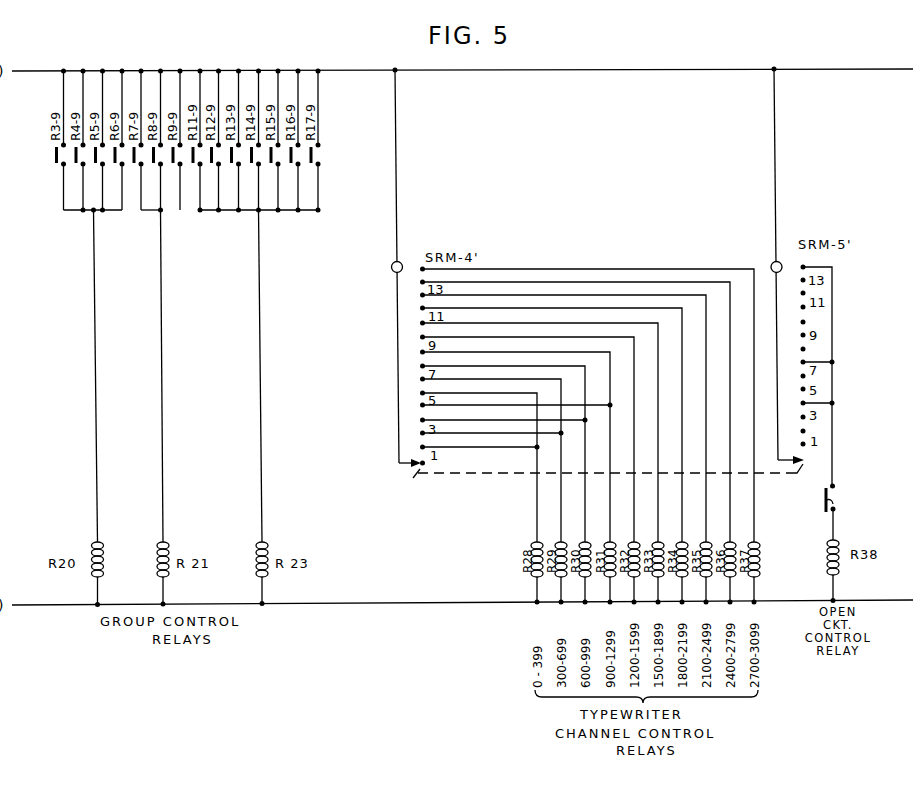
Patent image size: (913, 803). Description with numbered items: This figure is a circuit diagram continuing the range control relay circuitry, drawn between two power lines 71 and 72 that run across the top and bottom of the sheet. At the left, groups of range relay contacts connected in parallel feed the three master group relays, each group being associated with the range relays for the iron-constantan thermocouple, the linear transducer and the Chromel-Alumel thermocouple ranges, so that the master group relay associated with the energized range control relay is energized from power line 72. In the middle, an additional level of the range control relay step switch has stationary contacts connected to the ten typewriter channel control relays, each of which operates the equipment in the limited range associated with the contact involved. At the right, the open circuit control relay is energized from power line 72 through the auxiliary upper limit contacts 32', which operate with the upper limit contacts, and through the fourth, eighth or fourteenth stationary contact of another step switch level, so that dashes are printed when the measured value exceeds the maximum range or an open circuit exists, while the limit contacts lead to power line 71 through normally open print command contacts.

The power line 71 is at (638, 69).
The power line 72 is at (351, 603).
The auxiliary upper limit contacts 32' is at (847, 498).